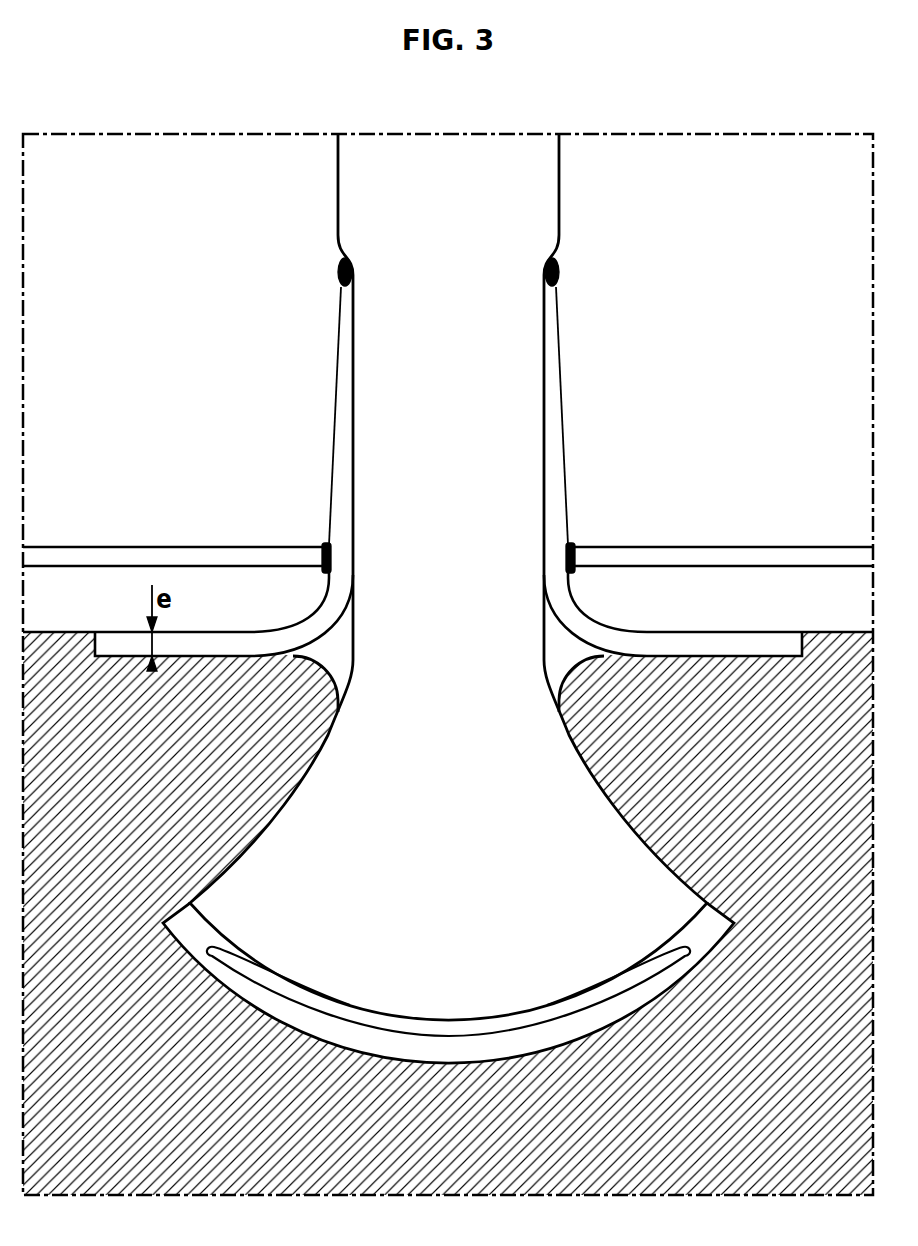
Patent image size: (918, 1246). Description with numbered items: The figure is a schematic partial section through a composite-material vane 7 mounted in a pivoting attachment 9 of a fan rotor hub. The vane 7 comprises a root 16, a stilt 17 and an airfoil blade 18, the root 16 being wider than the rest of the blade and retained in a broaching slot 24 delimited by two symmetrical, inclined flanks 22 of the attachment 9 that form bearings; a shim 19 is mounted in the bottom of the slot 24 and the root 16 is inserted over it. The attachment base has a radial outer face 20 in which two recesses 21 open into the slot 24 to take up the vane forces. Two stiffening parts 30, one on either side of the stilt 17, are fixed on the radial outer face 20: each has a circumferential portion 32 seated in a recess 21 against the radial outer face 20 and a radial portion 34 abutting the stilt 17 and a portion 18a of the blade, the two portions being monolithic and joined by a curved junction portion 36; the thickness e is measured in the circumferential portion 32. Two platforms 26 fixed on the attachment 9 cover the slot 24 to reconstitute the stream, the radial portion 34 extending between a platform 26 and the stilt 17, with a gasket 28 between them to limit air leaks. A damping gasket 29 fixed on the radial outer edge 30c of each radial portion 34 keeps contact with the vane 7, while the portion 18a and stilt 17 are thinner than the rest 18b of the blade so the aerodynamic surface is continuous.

The vane 7 is at (448, 577).
The pivoting attachment 9 is at (754, 1009).
The root 16 is at (436, 945).
The stilt 17 is at (436, 613).
The airfoil blade 18 is at (436, 341).
The portion of the blade 18a is at (488, 453).
The rest of the blade 18b is at (489, 206).
The shim 19 is at (446, 1040).
The radial outer face 20 is at (845, 630).
The recess 21 is at (790, 637).
The flank 22 is at (278, 710).
The broaching slot 24 is at (707, 932).
The platform 26 is at (190, 547).
The gasket 28 is at (327, 538).
The damping gasket 29 is at (340, 257).
The stiffening part 30 is at (325, 369).
The radial outer edge 30c is at (340, 284).
The circumferential portion 32 is at (192, 647).
The radial portion 34 is at (343, 461).
The curved junction portion 36 is at (305, 618).